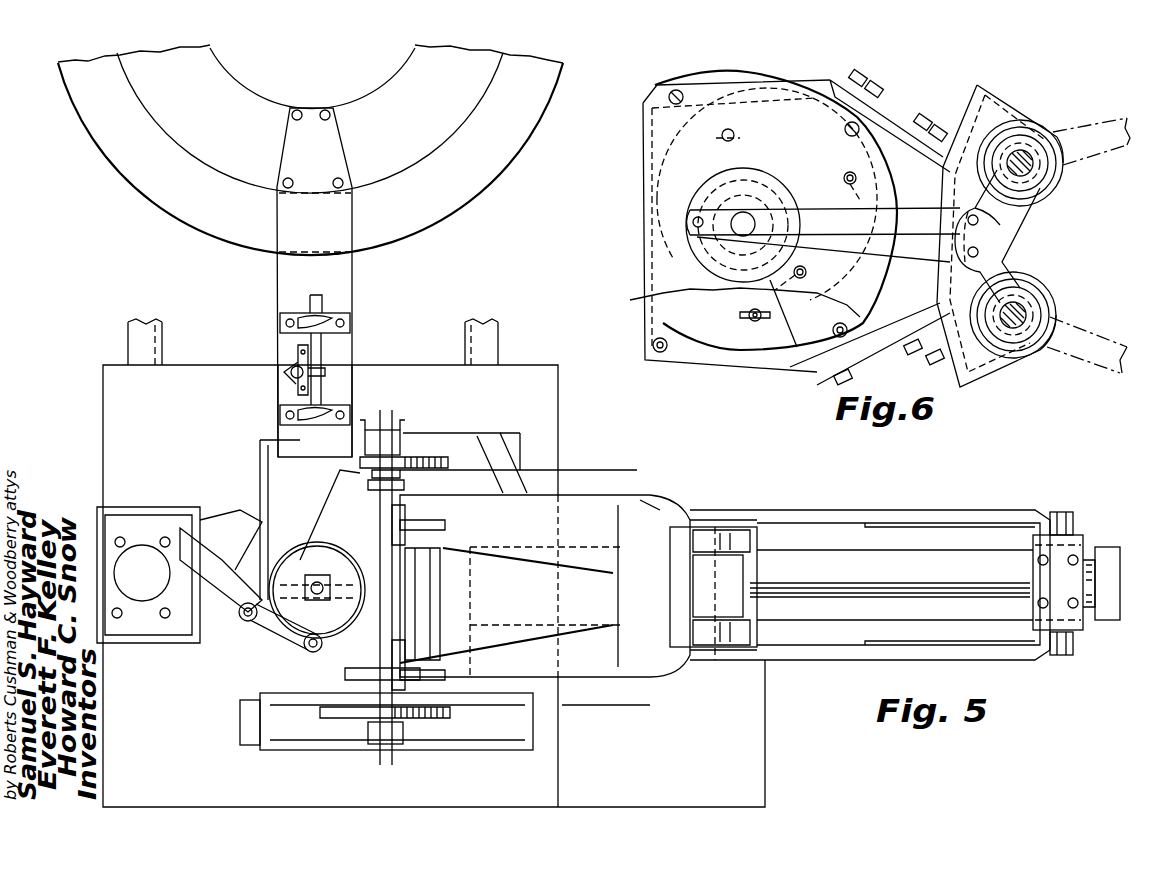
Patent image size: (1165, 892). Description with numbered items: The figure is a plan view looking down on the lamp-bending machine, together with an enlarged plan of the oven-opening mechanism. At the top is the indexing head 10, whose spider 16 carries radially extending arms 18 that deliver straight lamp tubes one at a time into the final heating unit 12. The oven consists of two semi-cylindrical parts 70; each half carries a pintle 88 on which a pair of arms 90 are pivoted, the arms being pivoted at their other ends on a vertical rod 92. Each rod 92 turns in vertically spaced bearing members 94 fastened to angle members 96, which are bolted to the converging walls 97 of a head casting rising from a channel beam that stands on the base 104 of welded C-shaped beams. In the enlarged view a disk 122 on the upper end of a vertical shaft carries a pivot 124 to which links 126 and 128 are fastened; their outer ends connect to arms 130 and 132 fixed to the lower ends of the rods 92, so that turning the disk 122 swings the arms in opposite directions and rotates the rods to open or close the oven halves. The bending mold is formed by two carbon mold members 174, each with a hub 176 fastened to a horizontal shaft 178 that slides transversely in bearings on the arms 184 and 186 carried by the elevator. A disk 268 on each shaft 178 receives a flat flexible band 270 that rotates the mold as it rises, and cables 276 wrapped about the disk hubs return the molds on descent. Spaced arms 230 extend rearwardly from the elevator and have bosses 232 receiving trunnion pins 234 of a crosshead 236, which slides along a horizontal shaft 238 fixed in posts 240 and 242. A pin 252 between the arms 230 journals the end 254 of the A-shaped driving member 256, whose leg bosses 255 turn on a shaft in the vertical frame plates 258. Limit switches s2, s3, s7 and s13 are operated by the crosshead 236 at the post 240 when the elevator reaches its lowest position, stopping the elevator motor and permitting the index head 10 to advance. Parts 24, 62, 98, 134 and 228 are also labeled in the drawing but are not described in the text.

In FIG. 5, the indexing head 10 is at (530, 157).
In FIG. 5, the final heating unit 12 is at (218, 650).
In FIG. 5, the spider 16 is at (497, 192).
In FIG. 5, the arms 18 is at (352, 286).
In FIG. 5, the feed rod 24 is at (262, 472).
In FIG. 6, the mounting plate 62 is at (790, 372).
In FIG. 5, the semi-cylindrical parts 70 is at (290, 545).
In FIG. 5, the pintle 88 is at (300, 648).
In FIG. 5, the arms 90 is at (246, 628).
In FIG. 5, the vertical rod 92 is at (235, 622).
In FIG. 6, the vertical rod 92 is at (1030, 150).
In FIG. 6, the bearing members 94 is at (1060, 185).
In FIG. 5, the angle members 96 is at (200, 510).
In FIG. 6, the angle members 96 is at (897, 120).
In FIG. 5, the converging walls 97 is at (142, 573).
In FIG. 5, the bearing plate 98 is at (128, 520).
In FIG. 5, the base 104 is at (300, 765).
In FIG. 6, the disk 122 is at (712, 190).
In FIG. 6, the pivot 124 is at (690, 222).
In FIG. 6, the link 126 is at (908, 195).
In FIG. 6, the link 128 is at (890, 255).
In FIG. 6, the arm 130 is at (1002, 262).
In FIG. 6, the arm 132 is at (1010, 220).
In FIG. 5, the bracket 134 is at (260, 462).
In FIG. 5, the mold members 174 is at (445, 580).
In FIG. 5, the hub 176 is at (410, 528).
In FIG. 5, the horizontal shaft 178 is at (410, 510).
In FIG. 5, the arm 184 is at (575, 500).
In FIG. 5, the arm 186 is at (458, 435).
In FIG. 5, the casing end 228 is at (655, 680).
In FIG. 5, the arms 230 is at (808, 660).
In FIG. 5, the bosses 232 is at (1065, 512).
In FIG. 5, the trunnion pins 234 is at (1080, 535).
In FIG. 5, the crosshead 236 is at (1015, 580).
In FIG. 5, the horizontal shaft 238 is at (945, 565).
In FIG. 5, the post 240 is at (1105, 547).
In FIG. 5, the post 242 is at (665, 505).
In FIG. 5, the pin 252 is at (735, 530).
In FIG. 5, the end of driving member 254 is at (335, 494).
In FIG. 5, the bosses 255 is at (372, 430).
In FIG. 5, the A-shaped driving member 256 is at (530, 605).
In FIG. 5, the vertical plates 258 is at (335, 472).
In FIG. 5, the disk 268 is at (408, 450).
In FIG. 5, the flexible band 270 is at (430, 750).
In FIG. 5, the cables 276 is at (530, 435).
In FIG. 5, the limit switch s2 is at (1030, 565).
In FIG. 5, the limit switch s3 is at (1062, 605).
In FIG. 5, the limit switch s7 is at (1093, 520).
In FIG. 5, the limit switch s13 is at (1095, 620).